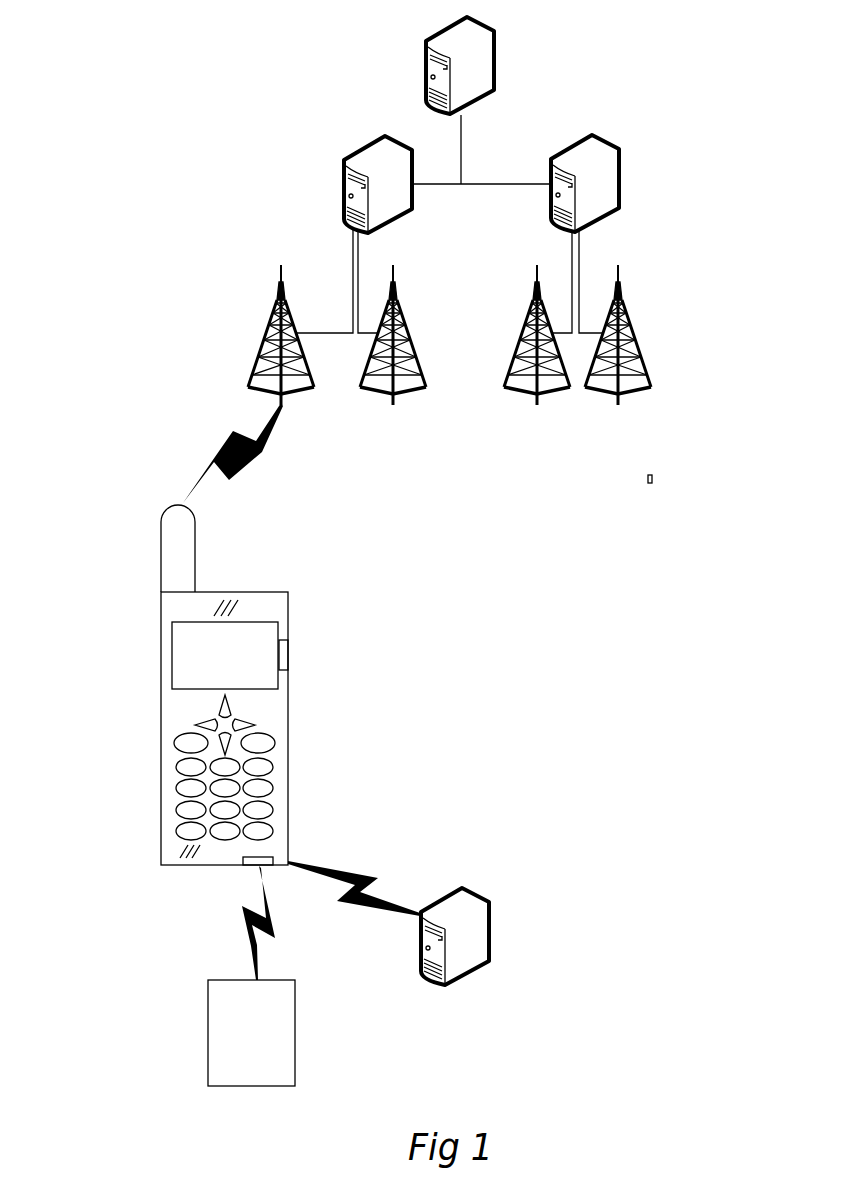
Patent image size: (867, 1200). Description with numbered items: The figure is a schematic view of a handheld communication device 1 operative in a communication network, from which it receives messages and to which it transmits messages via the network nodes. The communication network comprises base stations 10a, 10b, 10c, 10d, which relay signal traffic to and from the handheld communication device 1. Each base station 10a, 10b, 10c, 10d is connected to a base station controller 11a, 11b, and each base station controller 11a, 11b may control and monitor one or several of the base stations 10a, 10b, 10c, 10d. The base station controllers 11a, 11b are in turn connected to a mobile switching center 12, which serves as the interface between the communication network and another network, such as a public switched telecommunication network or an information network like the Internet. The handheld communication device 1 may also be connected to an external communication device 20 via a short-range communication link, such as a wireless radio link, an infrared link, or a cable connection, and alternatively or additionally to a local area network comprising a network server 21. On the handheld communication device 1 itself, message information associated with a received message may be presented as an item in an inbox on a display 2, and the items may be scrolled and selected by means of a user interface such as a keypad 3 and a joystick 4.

The handheld communication device 1 is at (200, 685).
The display 2 is at (258, 642).
The keypad 3 is at (192, 787).
The joystick 4 is at (200, 725).
The base station 10a is at (312, 385).
The base station 10b is at (430, 387).
The base station 10c is at (570, 387).
The base station 10d is at (647, 387).
The base station controller 11a is at (368, 158).
The base station controller 11b is at (593, 157).
The mobile switching center 12 is at (482, 85).
The external communication device 20 is at (295, 1040).
The network server 21 is at (480, 927).